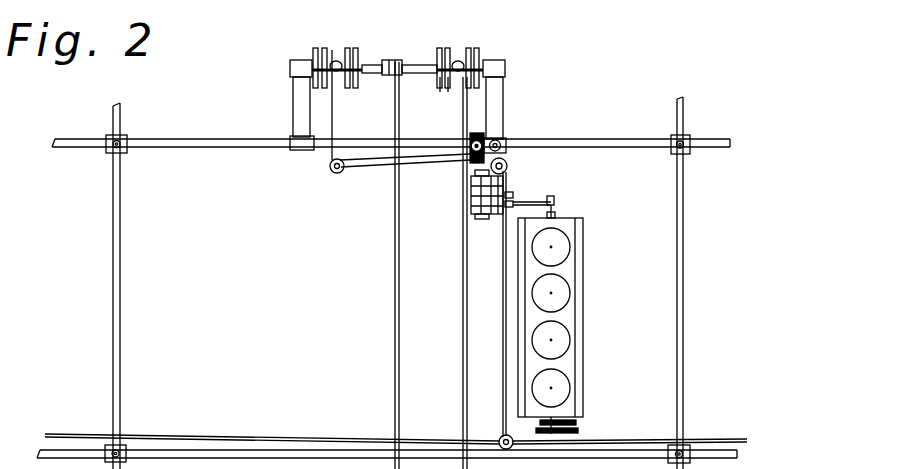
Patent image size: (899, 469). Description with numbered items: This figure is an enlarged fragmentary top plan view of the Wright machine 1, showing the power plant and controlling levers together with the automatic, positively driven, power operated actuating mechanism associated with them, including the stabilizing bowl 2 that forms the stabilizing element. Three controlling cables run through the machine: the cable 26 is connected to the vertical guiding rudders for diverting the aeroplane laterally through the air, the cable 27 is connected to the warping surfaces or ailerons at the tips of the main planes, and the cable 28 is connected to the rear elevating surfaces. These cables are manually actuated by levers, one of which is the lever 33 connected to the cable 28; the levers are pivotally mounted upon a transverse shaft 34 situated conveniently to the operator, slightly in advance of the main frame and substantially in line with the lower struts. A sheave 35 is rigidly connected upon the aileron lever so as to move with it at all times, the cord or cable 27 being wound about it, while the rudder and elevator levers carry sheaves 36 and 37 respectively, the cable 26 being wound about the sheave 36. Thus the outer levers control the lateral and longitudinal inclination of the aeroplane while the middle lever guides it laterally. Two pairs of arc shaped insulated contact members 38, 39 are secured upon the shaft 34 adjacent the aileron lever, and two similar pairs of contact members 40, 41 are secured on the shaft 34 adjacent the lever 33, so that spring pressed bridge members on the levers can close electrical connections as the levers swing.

The Wright machine 1 is at (185, 457).
The stabilizing bowl 2 is at (492, 141).
The controlling cable 26 is at (397, 276).
The controlling cable 27 is at (437, 162).
The controlling cable 28 is at (464, 316).
The lever 33 is at (466, 103).
The transverse shaft 34 is at (420, 66).
The sheave 35 is at (344, 50).
The sheave 36 is at (397, 60).
The sheave 37 is at (467, 55).
The arc shaped insulated contact member 38 is at (318, 48).
The arc shaped insulated contact member 39 is at (346, 62).
The arc shaped insulated contact member 40 is at (448, 86).
The arc shaped insulated contact member 41 is at (484, 52).